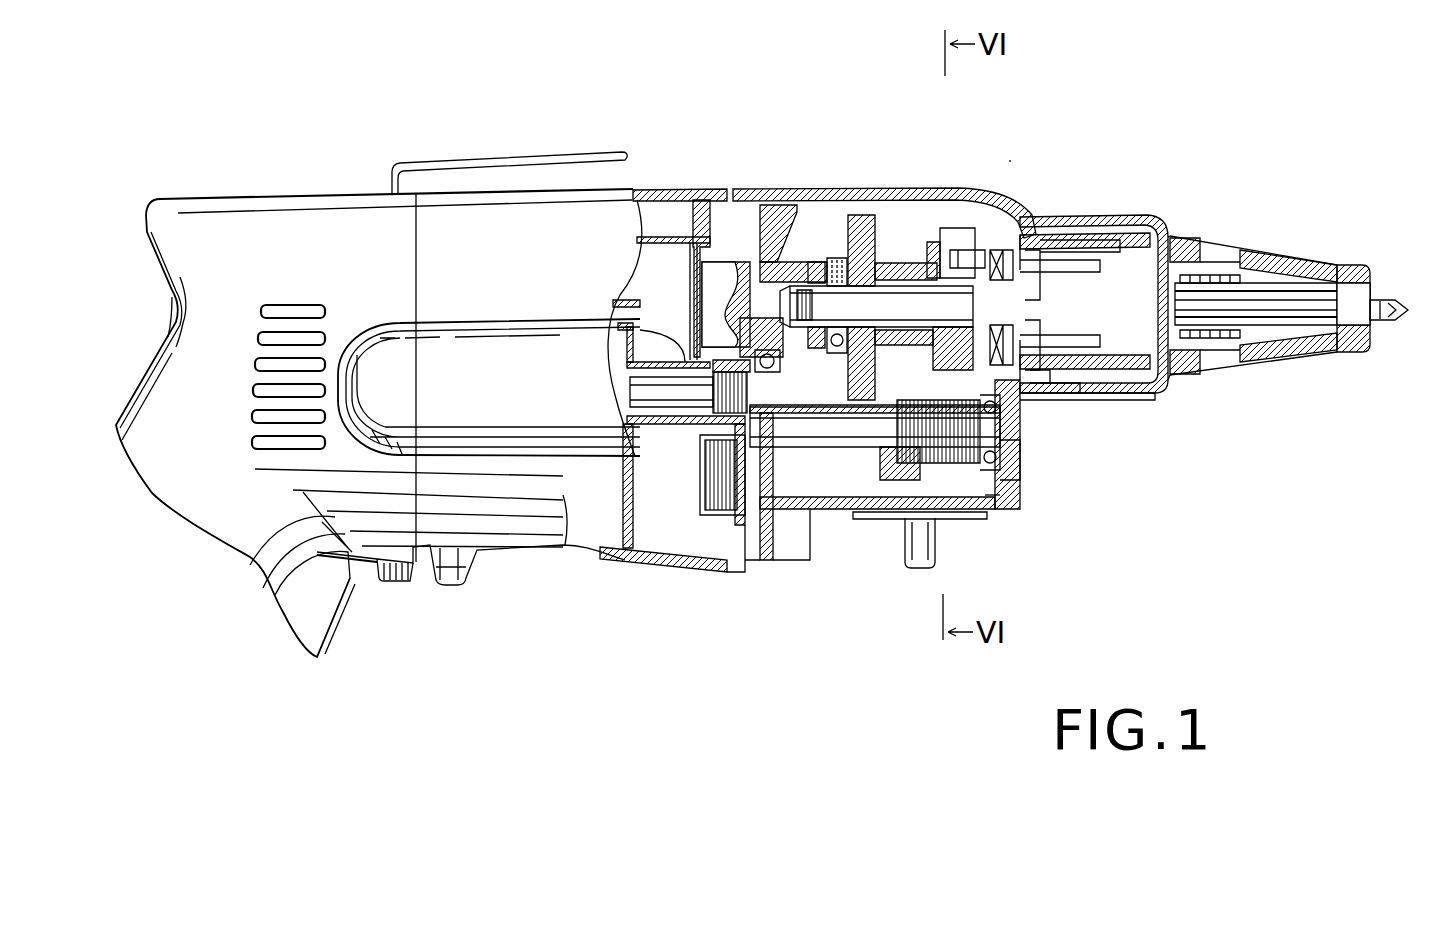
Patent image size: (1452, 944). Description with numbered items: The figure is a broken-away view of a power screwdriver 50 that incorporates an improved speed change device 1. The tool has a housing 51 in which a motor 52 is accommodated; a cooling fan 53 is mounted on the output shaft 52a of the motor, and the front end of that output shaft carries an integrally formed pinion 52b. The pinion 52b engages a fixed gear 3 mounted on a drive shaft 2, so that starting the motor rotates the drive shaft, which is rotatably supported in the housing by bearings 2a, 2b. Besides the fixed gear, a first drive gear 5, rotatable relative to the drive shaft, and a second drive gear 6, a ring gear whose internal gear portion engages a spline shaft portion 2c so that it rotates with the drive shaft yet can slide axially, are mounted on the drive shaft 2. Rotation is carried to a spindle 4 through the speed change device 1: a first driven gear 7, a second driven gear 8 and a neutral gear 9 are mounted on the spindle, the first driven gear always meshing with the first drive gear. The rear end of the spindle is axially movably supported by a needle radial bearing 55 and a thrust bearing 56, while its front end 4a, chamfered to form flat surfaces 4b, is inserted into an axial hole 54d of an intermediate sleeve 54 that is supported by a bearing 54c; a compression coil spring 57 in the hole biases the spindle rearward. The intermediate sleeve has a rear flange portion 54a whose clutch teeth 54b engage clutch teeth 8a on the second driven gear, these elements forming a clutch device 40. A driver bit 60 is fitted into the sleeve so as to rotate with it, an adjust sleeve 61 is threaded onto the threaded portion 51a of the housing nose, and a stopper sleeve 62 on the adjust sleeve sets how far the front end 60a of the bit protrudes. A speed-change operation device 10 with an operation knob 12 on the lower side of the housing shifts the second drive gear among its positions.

The speed change device 1 is at (914, 290).
The drive shaft 2 is at (838, 420).
The bearing 2a is at (990, 460).
The bearing 2b is at (738, 556).
The spline shaft portion 2c is at (985, 505).
The fixed gear 3 is at (802, 520).
The spindle 4 is at (903, 229).
The front end 4a is at (985, 345).
The flat surfaces 4b is at (1130, 240).
The first drive gear 5 is at (876, 432).
The second drive gear 6 is at (945, 462).
The first driven gear 7 is at (858, 228).
The second driven gear 8 is at (972, 290).
The clutch teeth 8a is at (1040, 380).
The neutral gear 9 is at (952, 286).
The speed-change operation device 10 is at (913, 601).
The operation knob 12 is at (895, 540).
The clutch device 40 is at (962, 470).
The power screwdriver 50 is at (1074, 152).
The housing 51 is at (524, 222).
The threaded portion 51a is at (1150, 398).
The motor 52 is at (655, 340).
The output shaft 52a is at (702, 400).
The pinion 52b is at (748, 500).
The cooling fan 53 is at (738, 290).
The intermediate sleeve 54 is at (1150, 232).
The flange portion 54a is at (1040, 207).
The clutch teeth 54b is at (1005, 320).
The bearing 54c is at (1080, 396).
The axial hole 54d is at (1036, 382).
The needle radial bearing 55 is at (809, 262).
The thrust bearing 56 is at (836, 325).
The compression coil spring 57 is at (1228, 245).
The driver bit 60 is at (1205, 310).
The front end 60a is at (1388, 298).
The adjust sleeve 61 is at (1150, 400).
The stopper sleeve 62 is at (1258, 370).